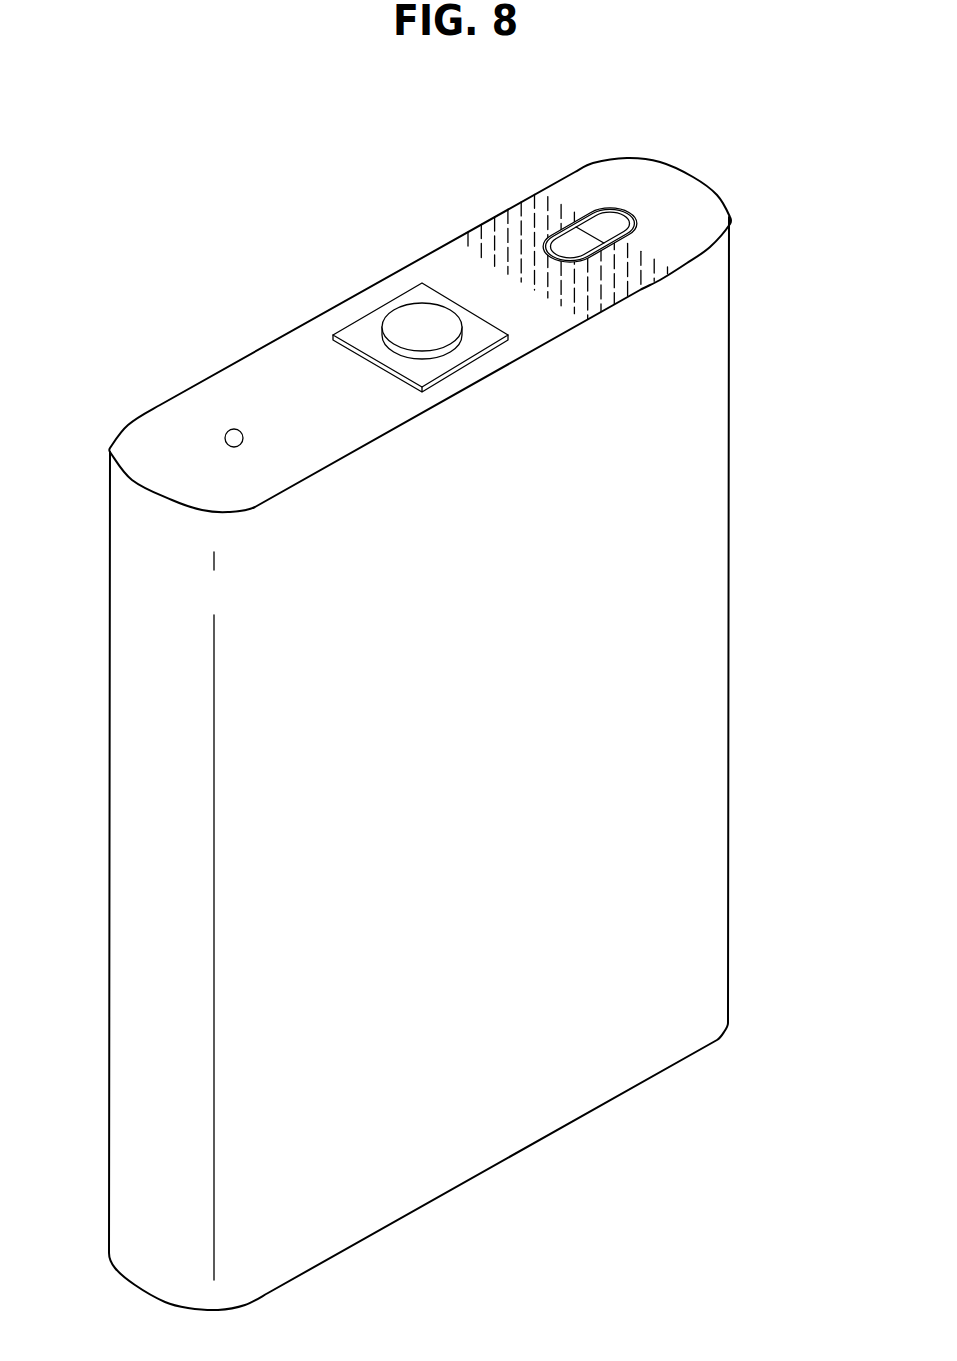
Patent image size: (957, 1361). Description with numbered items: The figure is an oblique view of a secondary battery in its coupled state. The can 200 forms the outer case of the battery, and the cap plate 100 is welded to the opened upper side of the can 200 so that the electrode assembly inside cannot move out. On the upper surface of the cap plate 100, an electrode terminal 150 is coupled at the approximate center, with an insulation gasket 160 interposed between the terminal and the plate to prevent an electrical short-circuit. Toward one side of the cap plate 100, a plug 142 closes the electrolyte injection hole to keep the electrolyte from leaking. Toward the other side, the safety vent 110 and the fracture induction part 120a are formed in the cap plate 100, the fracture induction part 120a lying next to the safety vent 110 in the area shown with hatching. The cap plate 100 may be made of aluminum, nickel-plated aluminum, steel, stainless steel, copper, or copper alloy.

The cap plate 100 is at (270, 363).
The safety vent 110 is at (622, 210).
The fracture induction part 120a is at (522, 215).
The plug 142 is at (233, 433).
The electrode terminal 150 is at (420, 307).
The insulation gasket 160 is at (370, 323).
The can 200 is at (700, 597).